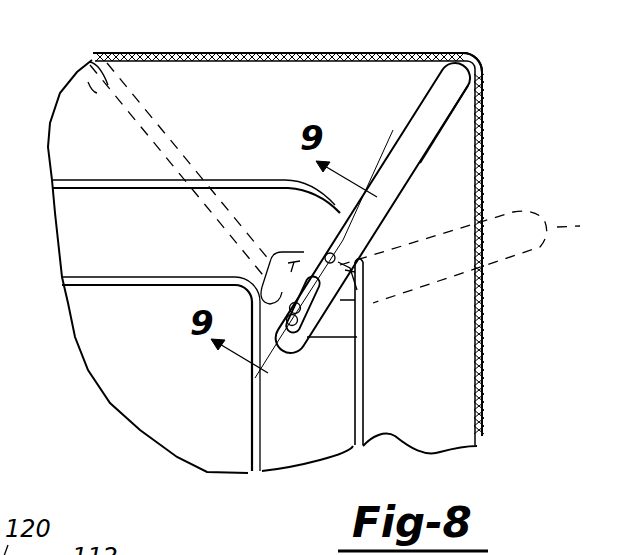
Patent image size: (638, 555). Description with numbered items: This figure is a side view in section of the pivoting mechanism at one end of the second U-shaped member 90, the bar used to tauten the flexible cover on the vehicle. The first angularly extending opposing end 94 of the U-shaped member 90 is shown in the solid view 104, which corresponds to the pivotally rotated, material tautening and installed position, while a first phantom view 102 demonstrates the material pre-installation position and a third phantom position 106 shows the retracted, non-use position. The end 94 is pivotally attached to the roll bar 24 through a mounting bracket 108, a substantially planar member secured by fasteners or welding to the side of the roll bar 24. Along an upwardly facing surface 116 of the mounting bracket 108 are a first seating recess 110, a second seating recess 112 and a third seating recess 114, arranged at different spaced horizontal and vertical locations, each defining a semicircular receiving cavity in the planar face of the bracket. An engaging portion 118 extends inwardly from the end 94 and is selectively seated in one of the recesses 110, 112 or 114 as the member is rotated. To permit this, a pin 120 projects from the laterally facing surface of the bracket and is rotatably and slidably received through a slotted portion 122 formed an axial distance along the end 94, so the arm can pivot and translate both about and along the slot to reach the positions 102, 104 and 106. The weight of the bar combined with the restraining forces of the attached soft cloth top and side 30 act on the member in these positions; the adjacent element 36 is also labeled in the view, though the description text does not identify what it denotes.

The roll bar 24 is at (140, 263).
The soft cloth top and side 30 is at (367, 53).
The side seal strip 36 is at (485, 118).
The second U-shaped member 90 is at (408, 110).
The first angularly extending opposing end 94 is at (429, 152).
The first phantom view 102 is at (597, 207).
The second solid view 104 is at (465, 53).
The third phantom position 106 is at (90, 60).
The mounting bracket 108 is at (350, 313).
The first seating recess 110 is at (356, 272).
The second seating recess 112 is at (322, 240).
The third seating recess 114 is at (274, 290).
The upwardly facing surface 116 is at (262, 285).
The engaging portion 118 is at (325, 250).
The pin 120 is at (280, 338).
The slotted portion 122 is at (320, 303).